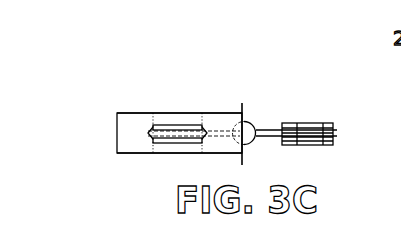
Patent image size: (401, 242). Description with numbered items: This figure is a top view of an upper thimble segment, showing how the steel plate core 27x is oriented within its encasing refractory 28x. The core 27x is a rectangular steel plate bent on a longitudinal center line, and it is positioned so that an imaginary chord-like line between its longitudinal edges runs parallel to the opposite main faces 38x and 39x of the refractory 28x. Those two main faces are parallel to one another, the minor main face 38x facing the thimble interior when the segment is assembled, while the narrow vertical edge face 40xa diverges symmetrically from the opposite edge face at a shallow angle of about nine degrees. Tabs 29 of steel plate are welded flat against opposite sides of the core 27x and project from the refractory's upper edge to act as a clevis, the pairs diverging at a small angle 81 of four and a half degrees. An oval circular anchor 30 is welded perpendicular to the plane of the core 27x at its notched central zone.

The refractory 28x is at (132, 132).
The main face 39x is at (137, 113).
The edge face 40xa is at (117, 121).
The main face 38x is at (135, 153).
The anchor 30 is at (250, 120).
The steel plate core 27x is at (265, 124).
The tab 29 is at (322, 116).
The angle 81 is at (260, 148).